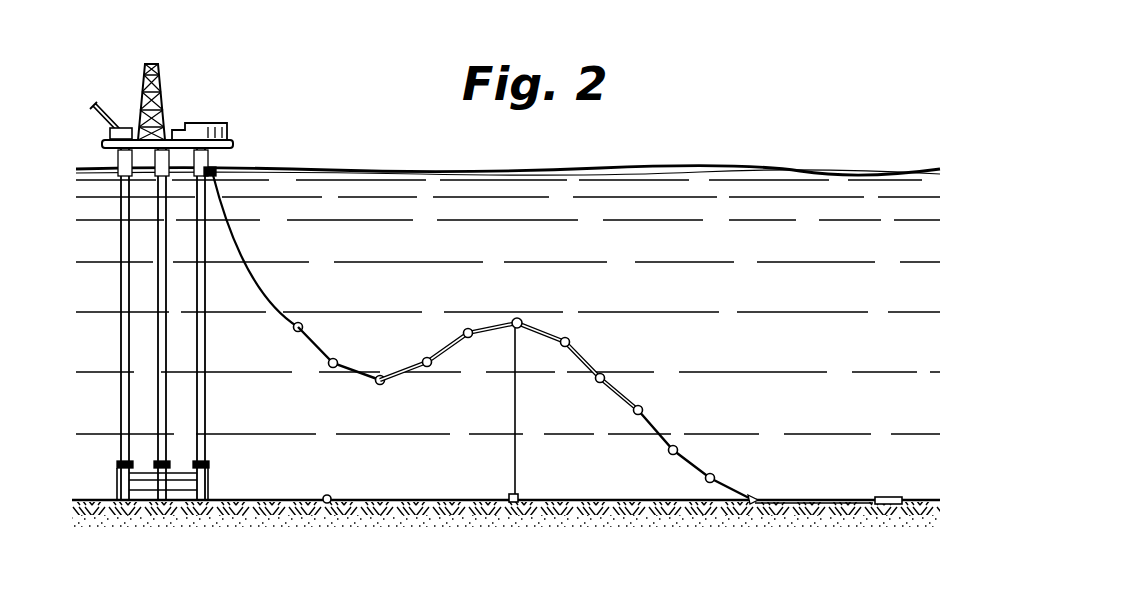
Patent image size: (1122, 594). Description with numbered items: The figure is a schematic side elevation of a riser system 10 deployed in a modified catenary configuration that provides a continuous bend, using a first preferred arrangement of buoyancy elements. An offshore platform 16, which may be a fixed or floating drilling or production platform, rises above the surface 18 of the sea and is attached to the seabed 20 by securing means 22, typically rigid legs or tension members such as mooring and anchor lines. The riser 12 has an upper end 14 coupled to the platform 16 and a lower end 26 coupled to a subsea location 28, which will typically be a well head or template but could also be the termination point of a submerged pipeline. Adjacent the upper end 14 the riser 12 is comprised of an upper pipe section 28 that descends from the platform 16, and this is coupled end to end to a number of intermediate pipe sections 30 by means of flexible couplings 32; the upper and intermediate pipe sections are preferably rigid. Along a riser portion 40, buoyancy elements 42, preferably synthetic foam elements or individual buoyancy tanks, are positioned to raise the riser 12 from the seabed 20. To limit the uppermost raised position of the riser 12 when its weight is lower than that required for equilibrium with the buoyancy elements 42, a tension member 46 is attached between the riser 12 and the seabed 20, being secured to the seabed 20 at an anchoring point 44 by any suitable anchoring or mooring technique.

The riser system 10 is at (640, 348).
The riser 12 is at (652, 425).
The upper end 14 is at (220, 176).
The offshore platform 16 is at (232, 148).
The surface 18 is at (618, 168).
The seabed 20 is at (322, 505).
The securing means 22 is at (163, 386).
The lower end 26 is at (872, 505).
The upper pipe section 28 is at (258, 269).
The intermediate pipe sections 30 is at (357, 376).
The flexible couplings 32 is at (384, 375).
The riser portion 40 is at (476, 345).
The buoyancy elements 42 is at (536, 325).
The anchoring point 44 is at (510, 505).
The tension member 46 is at (515, 460).